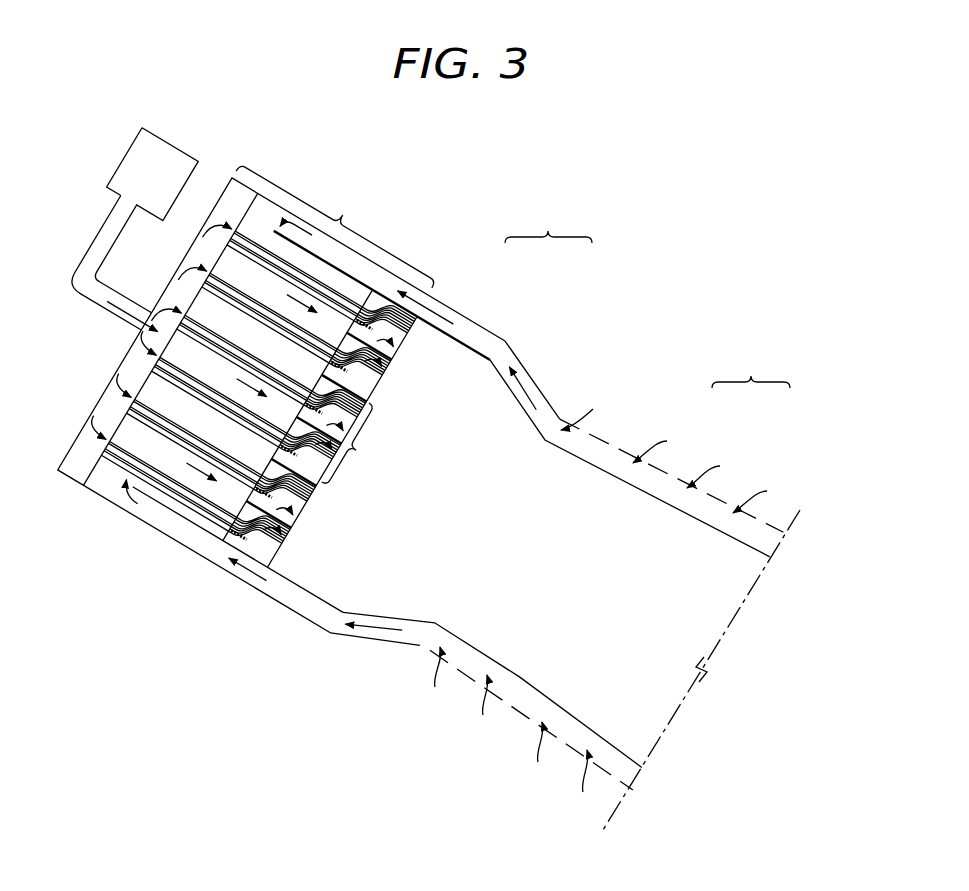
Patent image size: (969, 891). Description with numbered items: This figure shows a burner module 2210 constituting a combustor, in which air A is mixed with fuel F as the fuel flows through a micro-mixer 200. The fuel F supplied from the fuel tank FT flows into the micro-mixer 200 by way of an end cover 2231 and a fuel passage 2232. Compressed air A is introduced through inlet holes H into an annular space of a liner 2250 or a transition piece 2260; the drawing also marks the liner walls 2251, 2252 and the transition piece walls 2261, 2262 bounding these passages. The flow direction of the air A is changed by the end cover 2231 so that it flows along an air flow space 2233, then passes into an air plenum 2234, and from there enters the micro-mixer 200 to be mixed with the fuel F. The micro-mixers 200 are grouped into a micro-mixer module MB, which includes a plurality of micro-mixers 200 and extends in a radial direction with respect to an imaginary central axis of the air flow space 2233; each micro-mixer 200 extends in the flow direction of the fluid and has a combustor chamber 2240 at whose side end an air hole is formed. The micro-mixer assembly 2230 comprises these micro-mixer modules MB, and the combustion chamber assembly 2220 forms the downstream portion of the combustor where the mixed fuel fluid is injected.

The micro-mixer 200 is at (284, 561).
The burner module 2210 is at (463, 169).
The combustion chamber assembly 2220 is at (638, 361).
The micro-mixer assembly 2230 is at (368, 259).
The end cover 2231 is at (78, 450).
The fuel passage 2232 is at (168, 502).
The air flow space 2233 is at (222, 494).
The air plenum 2234 is at (242, 549).
The combustor chamber 2240 is at (466, 494).
The liner 2250 is at (545, 306).
The upper duct outer wall 2251 is at (507, 338).
The upper duct inner wall 2252 is at (490, 358).
The transition piece 2260 is at (567, 499).
The lower duct outer wall 2261 is at (733, 508).
The lower duct inner wall 2262 is at (713, 515).
The fuel tank FT is at (172, 143).
The micro-mixer module MB is at (328, 429).
The fuel F is at (139, 316).
The air A is at (389, 505).
The inlet holes H is at (627, 448).